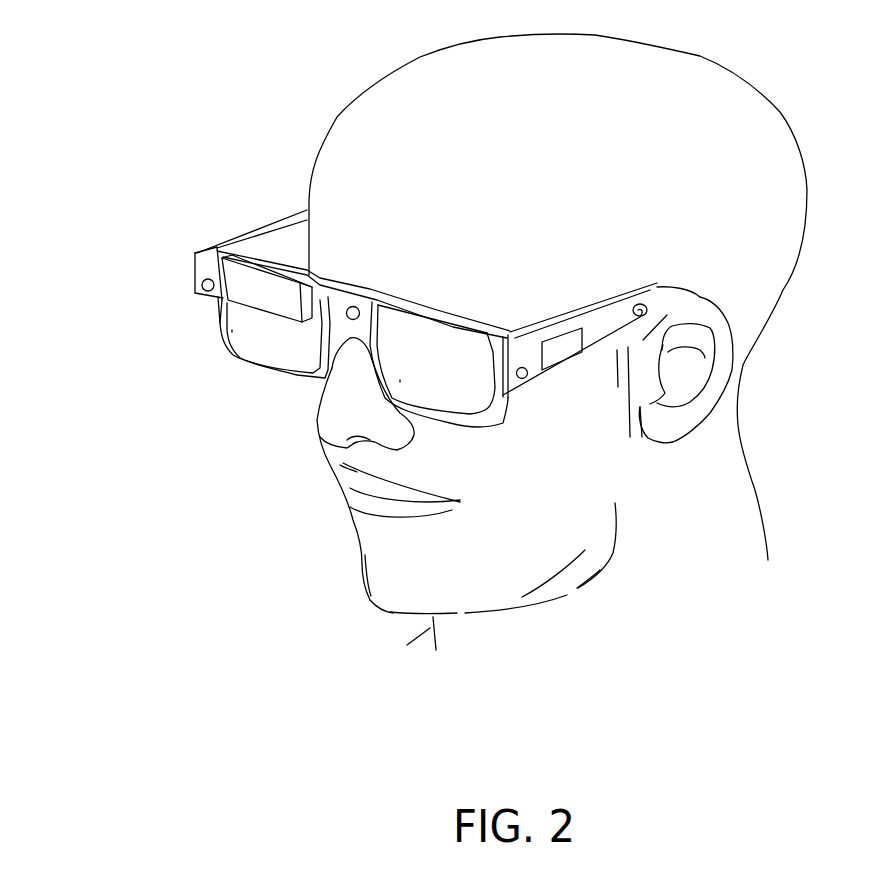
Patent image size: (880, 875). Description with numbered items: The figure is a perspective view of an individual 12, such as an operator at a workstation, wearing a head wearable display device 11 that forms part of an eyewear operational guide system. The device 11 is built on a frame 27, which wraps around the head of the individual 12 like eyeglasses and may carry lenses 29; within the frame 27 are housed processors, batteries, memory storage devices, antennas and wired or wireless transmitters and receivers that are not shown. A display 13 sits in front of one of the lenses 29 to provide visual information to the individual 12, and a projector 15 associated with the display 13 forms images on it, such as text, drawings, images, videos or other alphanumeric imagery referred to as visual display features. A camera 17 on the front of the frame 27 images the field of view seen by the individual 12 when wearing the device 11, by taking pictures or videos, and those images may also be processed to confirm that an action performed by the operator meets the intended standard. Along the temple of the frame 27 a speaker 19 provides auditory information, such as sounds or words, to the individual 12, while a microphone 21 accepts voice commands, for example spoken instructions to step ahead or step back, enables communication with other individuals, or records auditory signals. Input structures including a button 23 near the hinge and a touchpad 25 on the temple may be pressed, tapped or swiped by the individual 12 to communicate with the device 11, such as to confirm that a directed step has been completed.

The head wearable display device 11 is at (421, 298).
The individual 12 is at (698, 80).
The display 13 is at (263, 298).
The projector 15 is at (222, 288).
The camera 17 is at (358, 309).
The speaker 19 is at (655, 285).
The microphone 21 is at (522, 379).
The button 23 is at (197, 288).
The touchpad 25 is at (560, 348).
The frame 27 is at (277, 212).
The lenses 29 is at (267, 337).